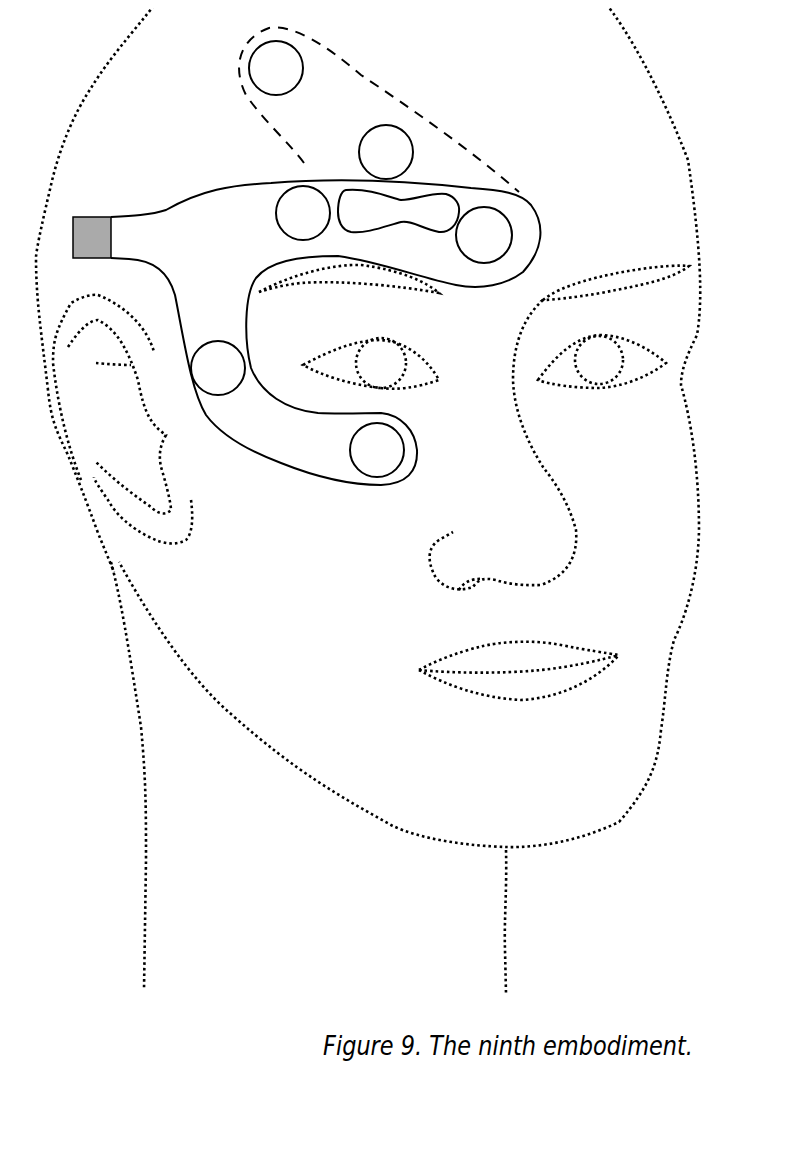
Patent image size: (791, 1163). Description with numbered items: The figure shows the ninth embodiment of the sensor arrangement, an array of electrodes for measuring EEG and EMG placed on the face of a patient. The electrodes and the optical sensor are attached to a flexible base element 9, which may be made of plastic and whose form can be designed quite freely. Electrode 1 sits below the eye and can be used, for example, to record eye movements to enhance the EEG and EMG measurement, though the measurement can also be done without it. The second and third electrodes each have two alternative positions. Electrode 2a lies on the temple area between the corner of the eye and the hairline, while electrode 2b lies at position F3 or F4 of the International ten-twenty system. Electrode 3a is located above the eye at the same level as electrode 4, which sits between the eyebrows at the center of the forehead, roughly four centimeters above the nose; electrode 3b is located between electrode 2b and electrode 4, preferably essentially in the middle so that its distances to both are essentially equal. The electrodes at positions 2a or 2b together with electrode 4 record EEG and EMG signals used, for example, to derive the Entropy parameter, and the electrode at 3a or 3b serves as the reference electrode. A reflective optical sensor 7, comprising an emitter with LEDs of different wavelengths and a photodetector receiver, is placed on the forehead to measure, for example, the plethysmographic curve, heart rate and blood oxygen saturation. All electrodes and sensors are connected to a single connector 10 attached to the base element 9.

The electrode 1 is at (377, 450).
The electrode 2a is at (218, 368).
The electrode 2b is at (276, 68).
The reference electrode 3a is at (303, 213).
The reference electrode 3b is at (386, 152).
The electrode 4 is at (484, 235).
The reflective optical sensor 7 is at (398, 209).
The base element 9 is at (298, 437).
The connector 10 is at (92, 243).